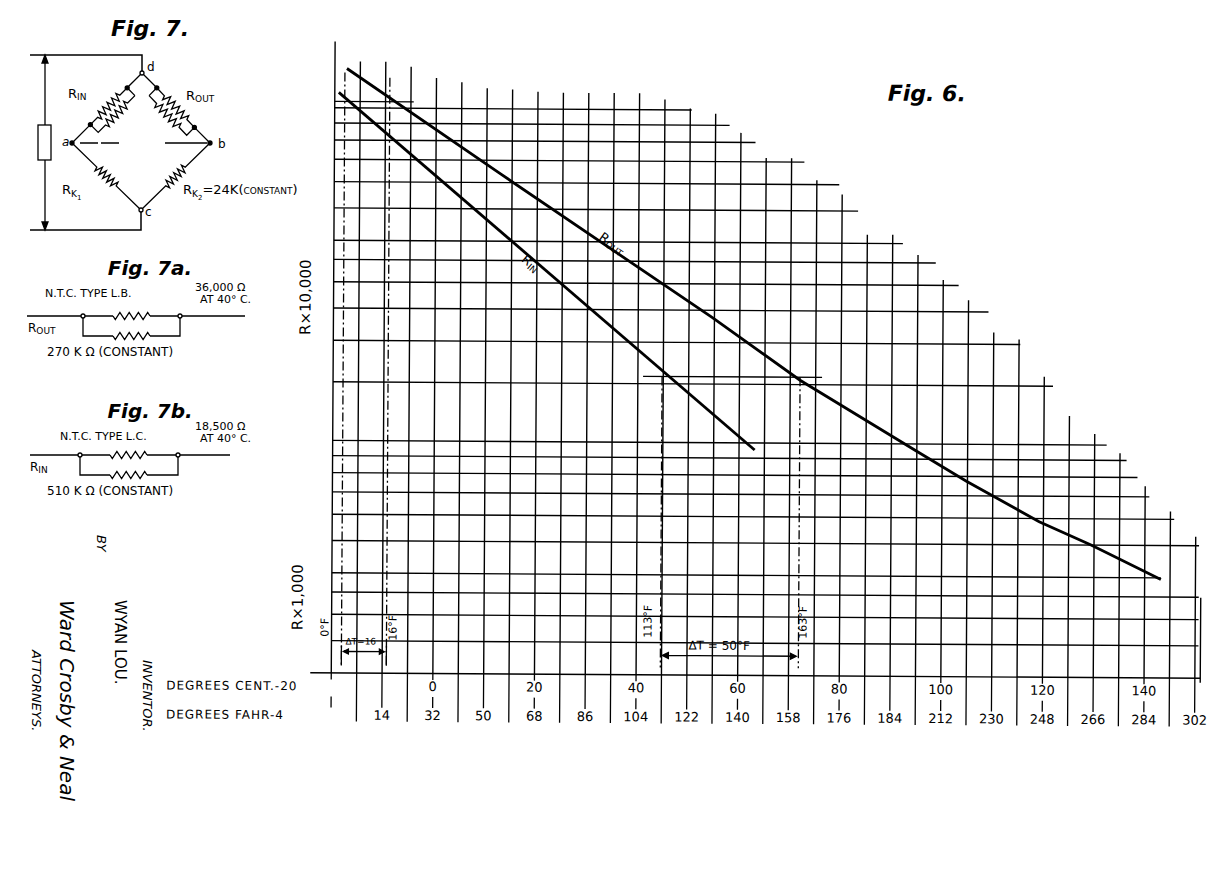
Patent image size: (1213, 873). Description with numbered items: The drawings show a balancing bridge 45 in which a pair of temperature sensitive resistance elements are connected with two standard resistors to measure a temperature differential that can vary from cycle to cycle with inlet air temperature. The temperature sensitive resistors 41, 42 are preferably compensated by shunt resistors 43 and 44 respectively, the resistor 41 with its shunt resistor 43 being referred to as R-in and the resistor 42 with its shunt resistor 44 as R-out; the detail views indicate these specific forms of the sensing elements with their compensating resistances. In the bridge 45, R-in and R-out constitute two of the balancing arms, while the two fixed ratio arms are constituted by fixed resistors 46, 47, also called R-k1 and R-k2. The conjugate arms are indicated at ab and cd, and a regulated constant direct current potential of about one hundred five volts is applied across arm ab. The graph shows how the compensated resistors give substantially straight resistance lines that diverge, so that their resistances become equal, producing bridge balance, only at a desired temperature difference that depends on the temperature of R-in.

The temperature sensitive resistance element 41 is at (126, 87).
The temperature sensitive resistance element 42 is at (160, 93).
The shunt resistor 43 is at (119, 118).
The shunt resistor 44 is at (163, 118).
The balancing bridge 45 is at (234, 128).
The fixed resistor 46 is at (118, 174).
The fixed resistor 47 is at (163, 174).